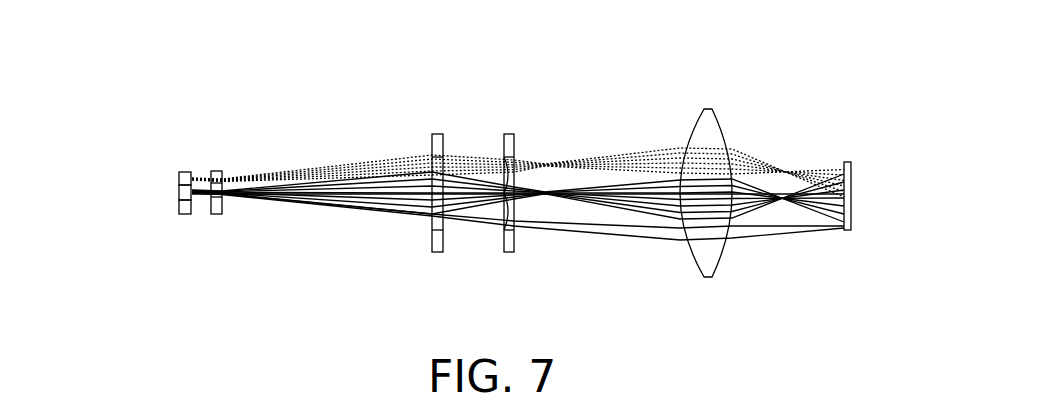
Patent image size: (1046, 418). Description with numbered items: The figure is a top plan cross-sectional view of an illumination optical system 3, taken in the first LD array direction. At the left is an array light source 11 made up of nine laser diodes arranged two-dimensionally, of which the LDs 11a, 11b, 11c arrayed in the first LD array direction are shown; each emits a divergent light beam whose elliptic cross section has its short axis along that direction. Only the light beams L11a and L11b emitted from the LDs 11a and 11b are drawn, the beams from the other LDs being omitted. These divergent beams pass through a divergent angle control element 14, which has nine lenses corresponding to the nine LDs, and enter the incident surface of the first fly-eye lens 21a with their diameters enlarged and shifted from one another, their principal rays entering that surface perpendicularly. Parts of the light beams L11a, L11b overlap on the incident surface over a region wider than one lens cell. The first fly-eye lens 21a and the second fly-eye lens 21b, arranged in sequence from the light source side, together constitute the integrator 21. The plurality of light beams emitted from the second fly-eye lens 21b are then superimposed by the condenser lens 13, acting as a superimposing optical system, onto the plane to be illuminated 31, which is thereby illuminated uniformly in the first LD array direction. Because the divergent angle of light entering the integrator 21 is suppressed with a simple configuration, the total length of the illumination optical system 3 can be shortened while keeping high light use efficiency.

The illumination optical system 3 is at (252, 57).
The array light source 11 is at (112, 162).
The LD 11a is at (178, 182).
The LD 11b is at (178, 193).
The LD 11c is at (180, 204).
The divergent angle control element 14 is at (212, 168).
The light beam L11a is at (305, 164).
The light beam L11b is at (300, 200).
The integrator 21 is at (534, 97).
The first fly-eye lens 21a is at (438, 183).
The second fly-eye lens 21b is at (507, 183).
The condenser lens 13 is at (715, 120).
The plane to be illuminated 31 is at (851, 164).